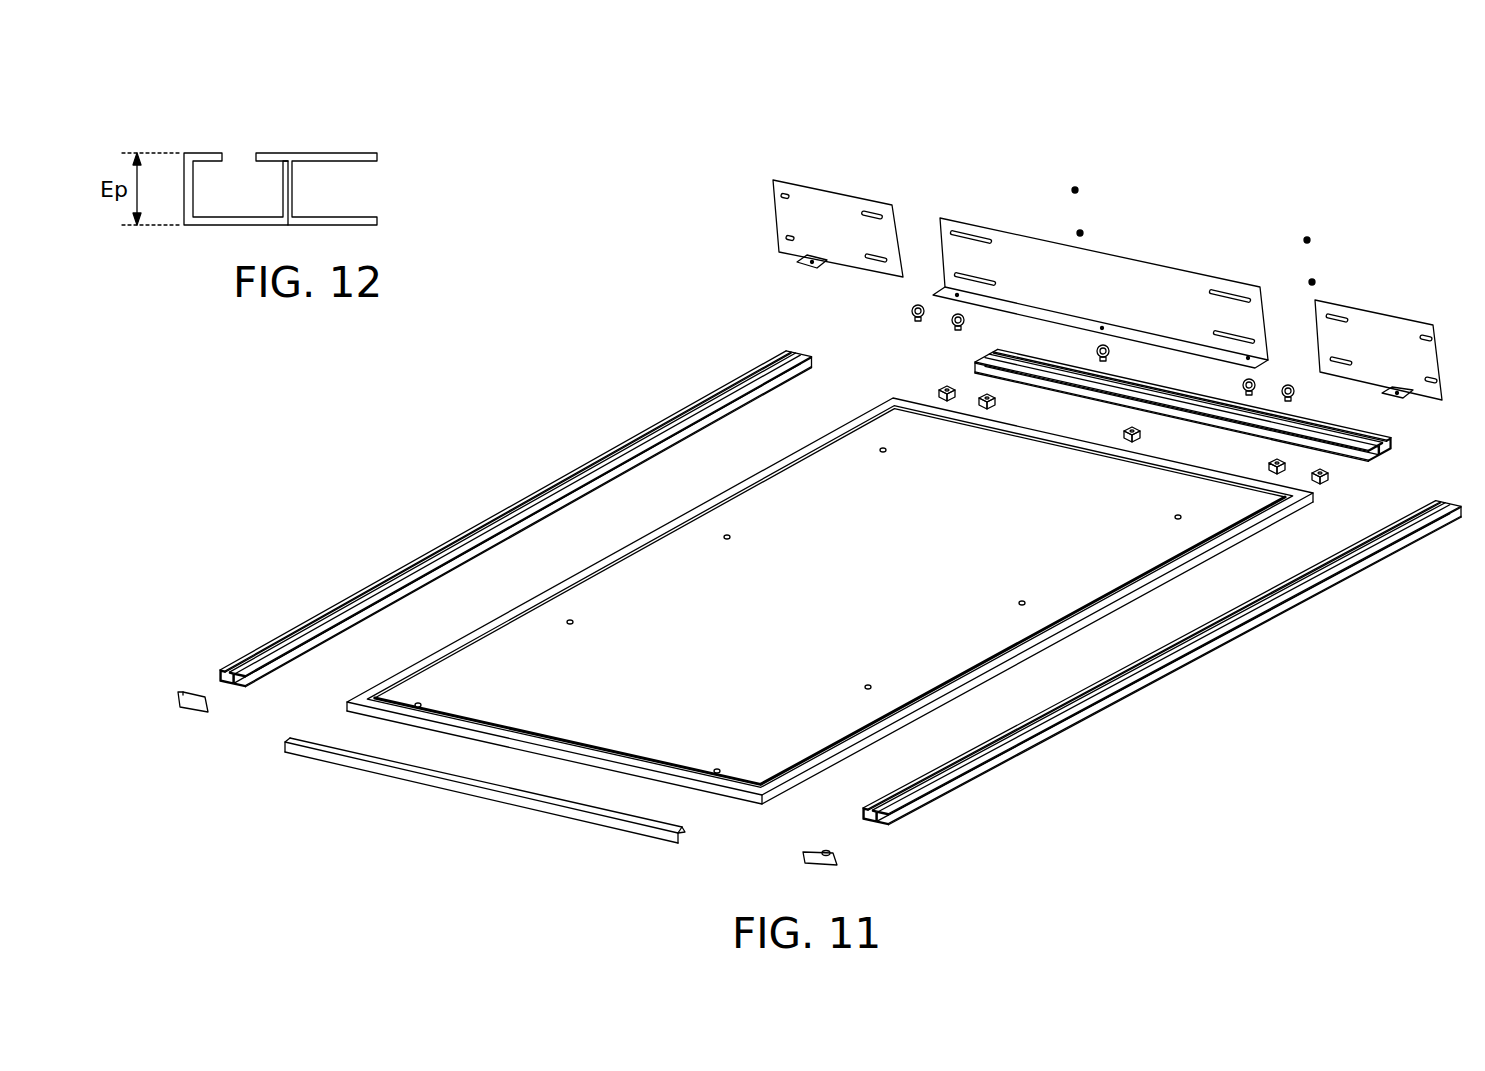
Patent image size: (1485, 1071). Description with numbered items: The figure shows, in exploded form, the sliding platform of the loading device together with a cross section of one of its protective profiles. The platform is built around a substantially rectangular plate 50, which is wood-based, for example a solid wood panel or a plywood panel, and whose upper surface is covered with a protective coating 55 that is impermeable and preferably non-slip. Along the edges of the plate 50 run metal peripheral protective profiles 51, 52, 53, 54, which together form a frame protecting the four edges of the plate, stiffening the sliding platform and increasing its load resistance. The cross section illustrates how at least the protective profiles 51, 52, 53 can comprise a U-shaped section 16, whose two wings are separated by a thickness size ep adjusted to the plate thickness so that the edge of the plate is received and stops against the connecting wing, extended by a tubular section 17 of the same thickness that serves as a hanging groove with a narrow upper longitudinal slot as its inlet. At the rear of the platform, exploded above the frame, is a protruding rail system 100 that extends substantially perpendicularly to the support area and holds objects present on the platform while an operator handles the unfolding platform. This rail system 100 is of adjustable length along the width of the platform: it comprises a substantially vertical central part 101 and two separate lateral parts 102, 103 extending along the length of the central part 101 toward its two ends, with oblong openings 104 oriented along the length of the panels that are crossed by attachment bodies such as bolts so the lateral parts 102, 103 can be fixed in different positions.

In FIG. 12, the U-shaped section 16 is at (292, 148).
In FIG. 12, the tubular section 17 is at (184, 148).
In FIG. 11, the plate 50 is at (1038, 642).
In FIG. 12, the protective profile 51 is at (335, 140).
In FIG. 11, the protective profile 51 is at (425, 558).
In FIG. 12, the protective profile 52 is at (335, 140).
In FIG. 11, the protective profile 52 is at (1135, 680).
In FIG. 12, the protective profile 53 is at (417, 83).
In FIG. 11, the protective profile 53 is at (1391, 439).
In FIG. 11, the protective profile 54 is at (487, 797).
In FIG. 11, the protective coating 55 is at (862, 592).
In FIG. 11, the rail system 100 is at (1203, 217).
In FIG. 11, the central part 101 is at (1115, 275).
In FIG. 11, the lateral part 102 is at (823, 208).
In FIG. 11, the lateral part 103 is at (1398, 335).
In FIG. 11, the oblong openings 104 is at (877, 213).